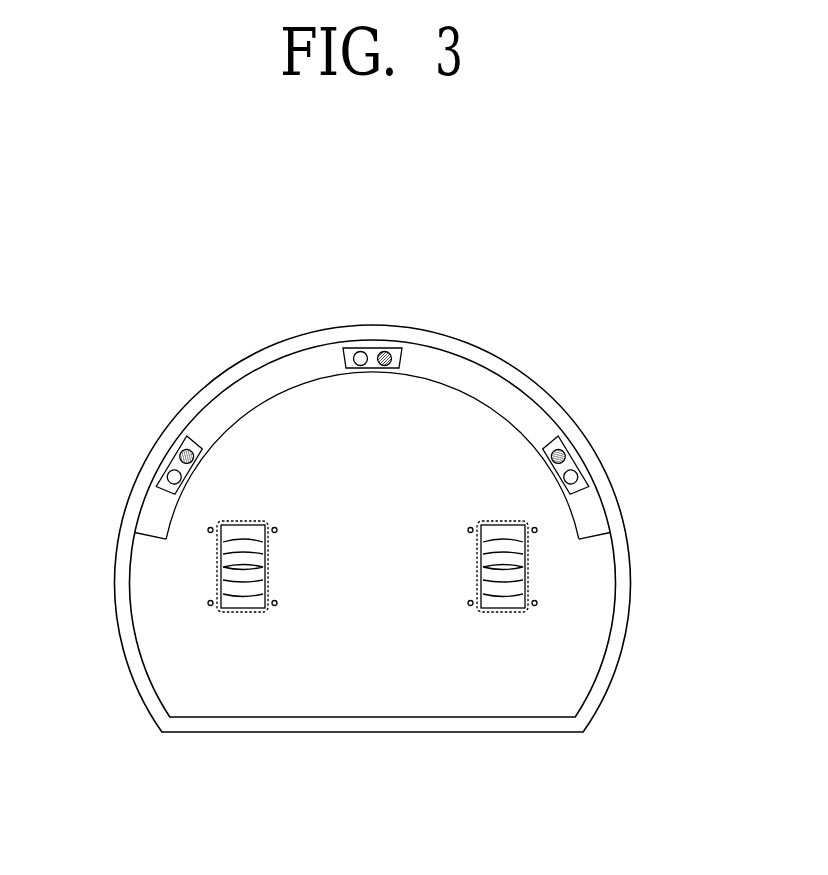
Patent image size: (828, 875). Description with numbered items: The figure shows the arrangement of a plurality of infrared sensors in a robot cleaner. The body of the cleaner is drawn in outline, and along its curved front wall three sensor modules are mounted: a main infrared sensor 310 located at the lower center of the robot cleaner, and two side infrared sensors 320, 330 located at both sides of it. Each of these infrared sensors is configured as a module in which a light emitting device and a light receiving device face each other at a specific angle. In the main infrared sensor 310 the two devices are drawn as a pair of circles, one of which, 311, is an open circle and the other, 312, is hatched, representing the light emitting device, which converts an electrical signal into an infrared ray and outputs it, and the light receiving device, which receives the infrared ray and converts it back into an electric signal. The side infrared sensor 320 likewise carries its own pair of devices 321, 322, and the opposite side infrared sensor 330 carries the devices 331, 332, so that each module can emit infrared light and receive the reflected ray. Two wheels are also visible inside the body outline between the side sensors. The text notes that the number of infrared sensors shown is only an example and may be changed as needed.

The main infrared sensor 310 is at (372, 348).
The light emitting unit of front sensor 311 is at (356, 352).
The light receiving unit of front sensor 312 is at (388, 352).
The side infrared sensor 320 is at (162, 458).
The light emitting unit of left sensor 321 is at (157, 481).
The light receiving unit of left sensor 322 is at (182, 441).
The side infrared sensor 330 is at (582, 450).
The light emitting unit of right sensor 331 is at (591, 478).
The light receiving unit of right sensor 332 is at (581, 429).